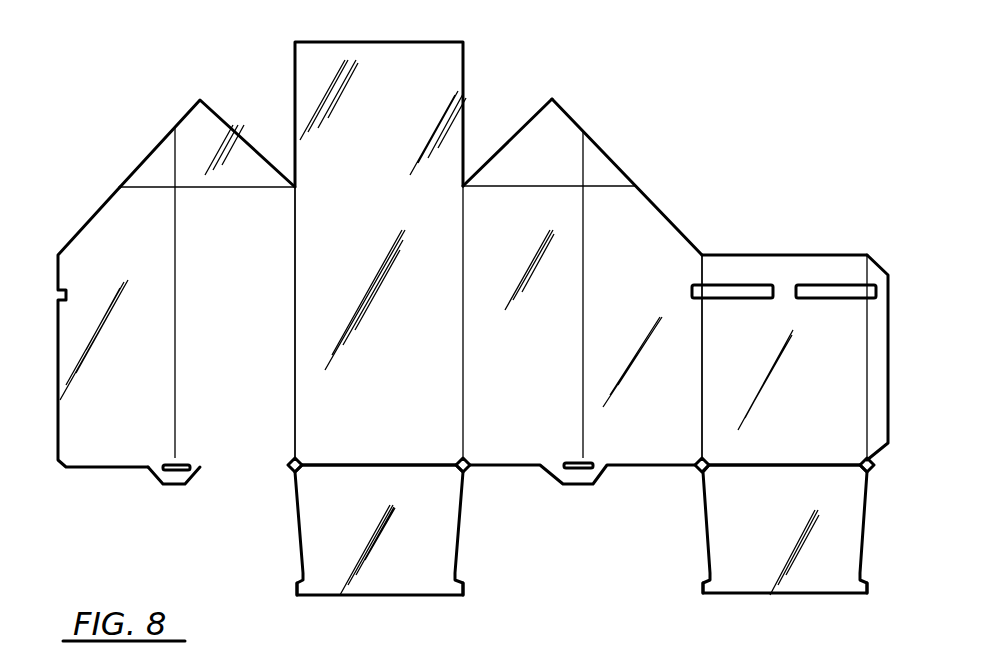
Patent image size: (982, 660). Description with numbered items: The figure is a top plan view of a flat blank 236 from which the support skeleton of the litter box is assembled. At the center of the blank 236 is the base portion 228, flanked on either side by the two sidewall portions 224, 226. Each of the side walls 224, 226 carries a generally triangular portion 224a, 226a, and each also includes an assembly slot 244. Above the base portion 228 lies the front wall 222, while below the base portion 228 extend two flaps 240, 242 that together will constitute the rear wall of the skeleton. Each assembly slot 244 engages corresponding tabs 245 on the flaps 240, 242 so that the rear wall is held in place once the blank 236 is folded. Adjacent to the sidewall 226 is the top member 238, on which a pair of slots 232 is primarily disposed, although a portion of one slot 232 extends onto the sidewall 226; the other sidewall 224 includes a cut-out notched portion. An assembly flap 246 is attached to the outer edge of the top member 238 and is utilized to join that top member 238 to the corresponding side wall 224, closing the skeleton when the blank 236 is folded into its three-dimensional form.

The front wall 222 is at (357, 121).
The sidewall portion 224 is at (205, 243).
The triangular portion 224a is at (163, 157).
The sidewall portion 226 is at (535, 226).
The triangular portion 226a is at (527, 146).
The base portion 228 is at (400, 398).
The slot 232 is at (738, 290).
The blank 236 is at (662, 174).
The top member 238 is at (728, 340).
The flap 240 is at (323, 510).
The flap 242 is at (743, 516).
The assembly slot 244 is at (185, 469).
The tab 245 is at (295, 584).
The assembly flap 246 is at (877, 385).